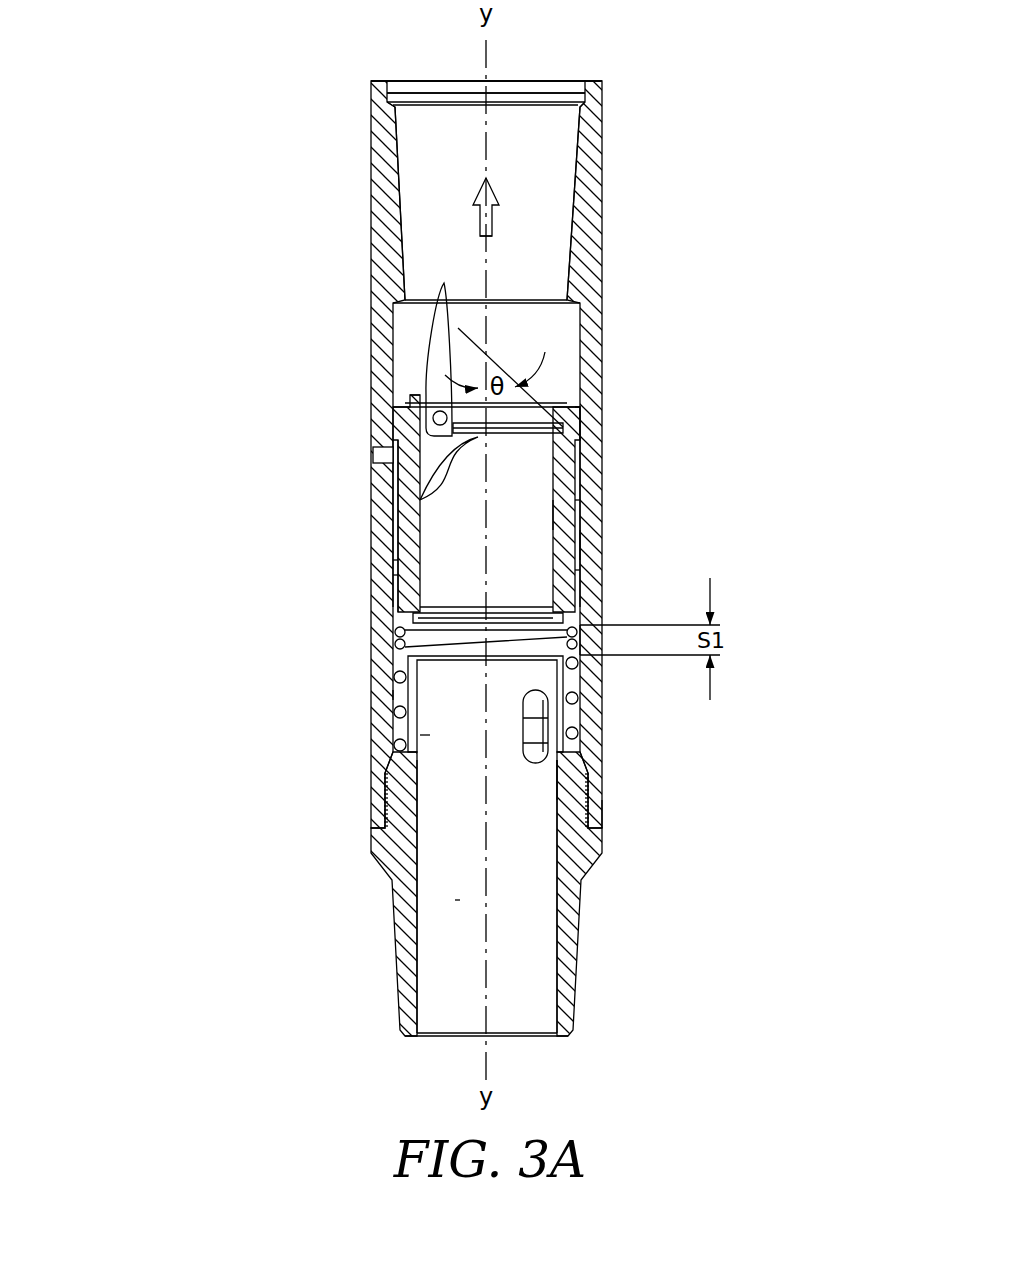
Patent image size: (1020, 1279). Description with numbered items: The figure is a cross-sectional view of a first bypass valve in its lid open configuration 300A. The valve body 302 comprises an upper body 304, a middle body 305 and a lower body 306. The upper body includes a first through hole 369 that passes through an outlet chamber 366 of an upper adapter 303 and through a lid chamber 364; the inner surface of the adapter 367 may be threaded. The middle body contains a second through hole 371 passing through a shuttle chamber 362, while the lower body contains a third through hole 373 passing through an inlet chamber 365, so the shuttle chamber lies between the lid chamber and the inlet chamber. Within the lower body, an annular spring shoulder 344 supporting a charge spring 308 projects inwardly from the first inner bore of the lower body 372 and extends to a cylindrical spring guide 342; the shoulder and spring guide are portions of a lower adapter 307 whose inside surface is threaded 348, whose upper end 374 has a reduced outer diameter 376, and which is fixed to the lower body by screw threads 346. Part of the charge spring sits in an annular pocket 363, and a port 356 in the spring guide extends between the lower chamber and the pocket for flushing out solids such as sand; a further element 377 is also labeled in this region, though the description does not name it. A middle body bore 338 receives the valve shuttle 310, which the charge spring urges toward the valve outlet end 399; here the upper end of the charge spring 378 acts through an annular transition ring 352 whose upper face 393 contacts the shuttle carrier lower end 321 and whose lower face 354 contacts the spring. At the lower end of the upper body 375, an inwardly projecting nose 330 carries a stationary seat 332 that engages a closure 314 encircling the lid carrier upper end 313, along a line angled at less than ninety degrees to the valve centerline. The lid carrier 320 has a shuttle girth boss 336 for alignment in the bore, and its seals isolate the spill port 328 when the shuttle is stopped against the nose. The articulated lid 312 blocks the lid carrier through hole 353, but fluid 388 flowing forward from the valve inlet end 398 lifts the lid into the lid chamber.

The lid open configuration 300A is at (313, 96).
The valve body 302 is at (615, 256).
The upper adapter 303 is at (381, 193).
The upper body 304 is at (602, 214).
The middle body 305 is at (600, 545).
The lower body 306 is at (603, 813).
The lower adapter 307 is at (568, 796).
The charge spring 308 is at (406, 662).
The valve shuttle 310 is at (385, 505).
The articulated lid 312 is at (425, 322).
The lid carrier upper end 313 is at (562, 484).
The closure 314 is at (568, 427).
The lid carrier 320 is at (398, 528).
The shuttle carrier lower end 321 is at (435, 626).
The spill port 328 is at (382, 457).
The inwardly projecting nose 330 is at (393, 430).
The stationary seat 332 is at (580, 463).
The shuttle girth boss 336 is at (567, 518).
The middle body bore 338 is at (398, 566).
The spring guide 342 is at (600, 716).
The annular spring shoulder 344 is at (600, 750).
The screw threads 346 is at (386, 800).
The threaded inside surface 348 is at (420, 980).
The annular transition ring 352 is at (400, 622).
The lid carrier through hole 353 is at (510, 555).
The lower face 354 is at (545, 636).
The port 356 is at (530, 724).
The shuttle chamber 362 is at (590, 576).
The annular pocket 363 is at (402, 695).
The lid chamber 364 is at (525, 328).
The inlet chamber 365 is at (453, 903).
The outlet chamber 366 is at (525, 183).
The inner surface of the adapter 367 is at (418, 255).
The first through hole 369 is at (480, 160).
The second through hole 371 is at (576, 505).
The first inner bore of the lower body 372 is at (396, 633).
The third through hole 373 is at (540, 857).
The upper end of the adapter 374 is at (430, 738).
The lower end of the upper body 375 is at (582, 393).
The reduced outer diameter 376 is at (600, 686).
The seal 377 is at (400, 742).
The upper end of the charge spring 378 is at (604, 645).
The fluid 388 is at (480, 223).
The upper face 393 is at (398, 578).
The valve inlet end 398 is at (545, 1038).
The valve outlet end 399 is at (552, 80).